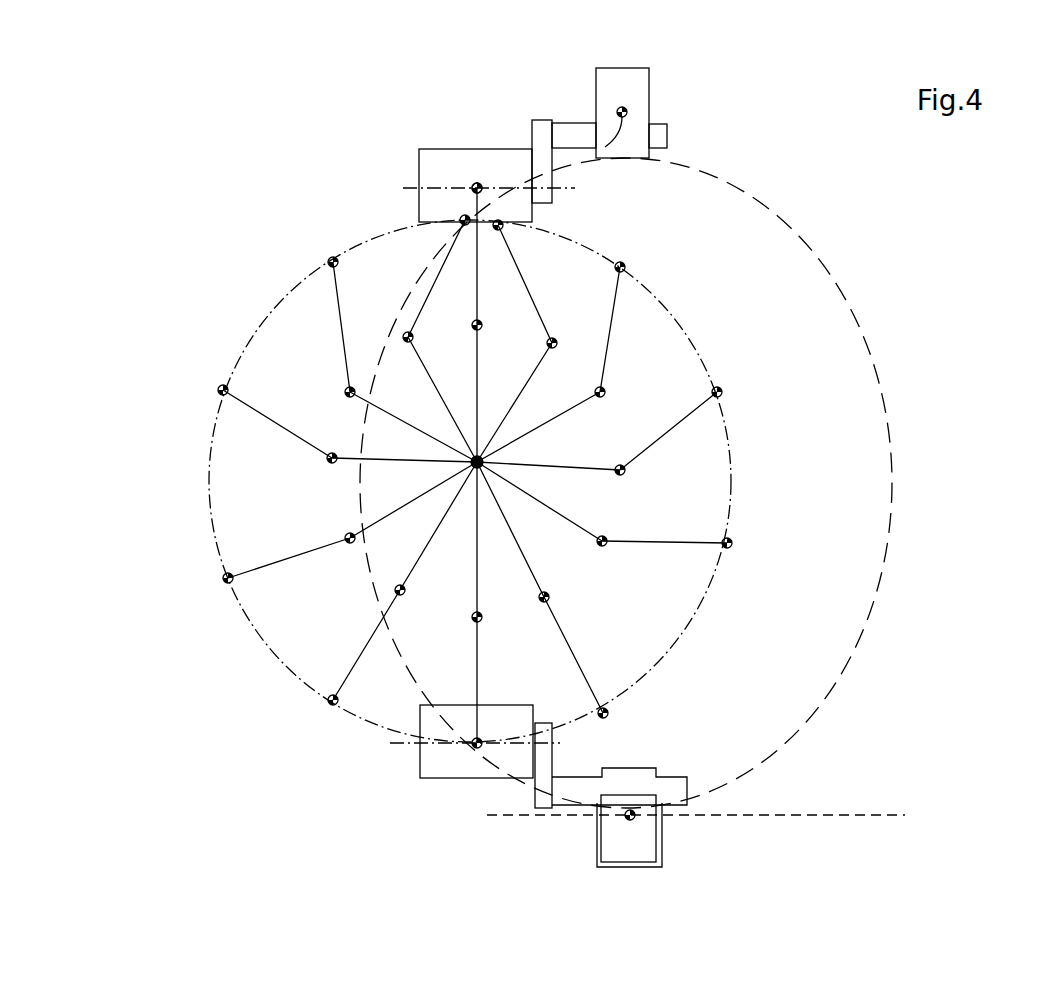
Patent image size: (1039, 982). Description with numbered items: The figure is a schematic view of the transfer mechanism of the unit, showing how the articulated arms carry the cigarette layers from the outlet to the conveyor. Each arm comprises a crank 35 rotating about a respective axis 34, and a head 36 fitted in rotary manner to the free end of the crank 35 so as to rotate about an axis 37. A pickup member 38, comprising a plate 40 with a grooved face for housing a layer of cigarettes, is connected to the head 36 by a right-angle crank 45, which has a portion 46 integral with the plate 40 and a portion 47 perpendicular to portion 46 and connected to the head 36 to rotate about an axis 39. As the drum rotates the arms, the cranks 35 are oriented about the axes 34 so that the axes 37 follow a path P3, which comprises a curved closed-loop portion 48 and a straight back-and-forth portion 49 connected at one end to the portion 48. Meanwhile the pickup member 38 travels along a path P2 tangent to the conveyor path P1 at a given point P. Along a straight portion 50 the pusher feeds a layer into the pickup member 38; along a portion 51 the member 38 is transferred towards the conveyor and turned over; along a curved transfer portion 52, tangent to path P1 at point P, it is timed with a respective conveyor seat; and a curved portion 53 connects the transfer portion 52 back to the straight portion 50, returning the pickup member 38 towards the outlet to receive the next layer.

The axis 34 is at (413, 338).
The crank 35 is at (427, 294).
The head 36 is at (467, 158).
The axis 37 is at (470, 187).
The pickup member 38 is at (674, 109).
The axis 39 is at (560, 192).
The plate 40 is at (640, 68).
The right-angle crank 45 is at (542, 112).
The portion 46 is at (577, 138).
The portion 47 is at (542, 138).
The curved closed-loop portion 48 is at (205, 483).
The straight back-and-forth portion 49 is at (419, 205).
The straight portion 50 is at (618, 125).
The portion 51 is at (895, 440).
The curved transfer portion 52 is at (785, 752).
The curved portion 53 is at (375, 580).
The point P is at (627, 818).
The path P1 is at (775, 815).
The path P2 is at (842, 675).
The path P3 is at (273, 657).